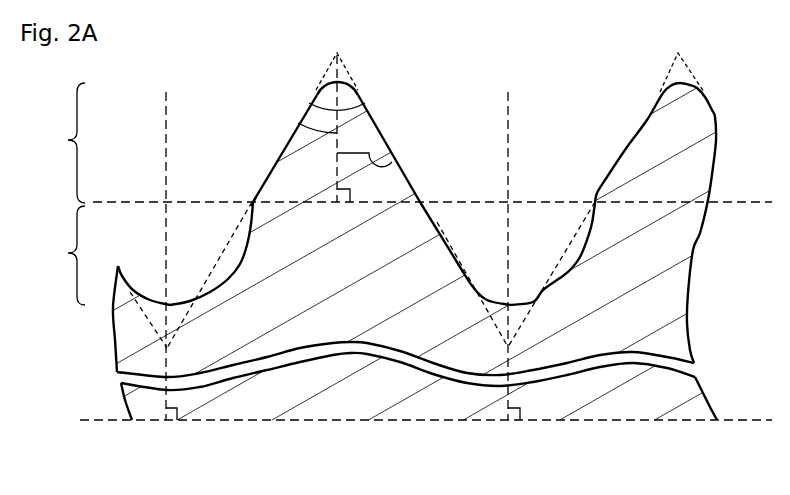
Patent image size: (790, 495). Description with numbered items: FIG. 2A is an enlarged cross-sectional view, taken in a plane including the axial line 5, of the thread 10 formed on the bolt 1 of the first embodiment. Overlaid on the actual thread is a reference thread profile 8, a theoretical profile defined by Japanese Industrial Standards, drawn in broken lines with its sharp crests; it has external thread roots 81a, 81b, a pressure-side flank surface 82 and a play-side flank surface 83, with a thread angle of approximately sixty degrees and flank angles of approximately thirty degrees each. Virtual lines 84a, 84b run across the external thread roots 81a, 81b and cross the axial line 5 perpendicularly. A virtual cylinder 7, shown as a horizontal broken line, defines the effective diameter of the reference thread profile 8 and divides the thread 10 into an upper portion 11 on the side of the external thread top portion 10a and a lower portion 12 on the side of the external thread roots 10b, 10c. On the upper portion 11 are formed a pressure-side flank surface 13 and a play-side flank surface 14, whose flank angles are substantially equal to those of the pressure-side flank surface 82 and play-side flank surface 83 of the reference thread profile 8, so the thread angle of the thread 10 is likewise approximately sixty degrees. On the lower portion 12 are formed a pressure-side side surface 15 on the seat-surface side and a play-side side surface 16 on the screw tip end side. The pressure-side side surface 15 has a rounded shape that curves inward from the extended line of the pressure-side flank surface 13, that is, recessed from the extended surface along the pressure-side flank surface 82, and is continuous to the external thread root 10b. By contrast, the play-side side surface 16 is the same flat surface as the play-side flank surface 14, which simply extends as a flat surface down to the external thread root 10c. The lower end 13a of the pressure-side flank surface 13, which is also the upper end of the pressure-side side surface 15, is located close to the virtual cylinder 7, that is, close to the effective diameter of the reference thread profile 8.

The bolt 1 is at (677, 305).
The axial line 5 is at (733, 420).
The virtual cylinder 7 is at (117, 201).
The reference thread profile 8 is at (347, 68).
The thread 10 is at (298, 47).
The external thread top portion 10a is at (336, 83).
The external thread root 10b is at (162, 300).
The external thread root 10c is at (513, 303).
The upper portion 11 is at (65, 143).
The lower portion 12 is at (65, 255).
The pressure-side flank surface 13 is at (270, 163).
The lower end 13a is at (249, 198).
The play-side flank surface 14 is at (411, 182).
The pressure-side side surface 15 is at (215, 283).
The play-side side surface 16 is at (457, 262).
The external thread root 81a is at (167, 350).
The external thread root 81b is at (508, 350).
The pressure-side flank surface 82 is at (229, 243).
The play-side flank surface 83 is at (437, 222).
The virtual line 84a is at (165, 112).
The virtual line 84b is at (509, 110).